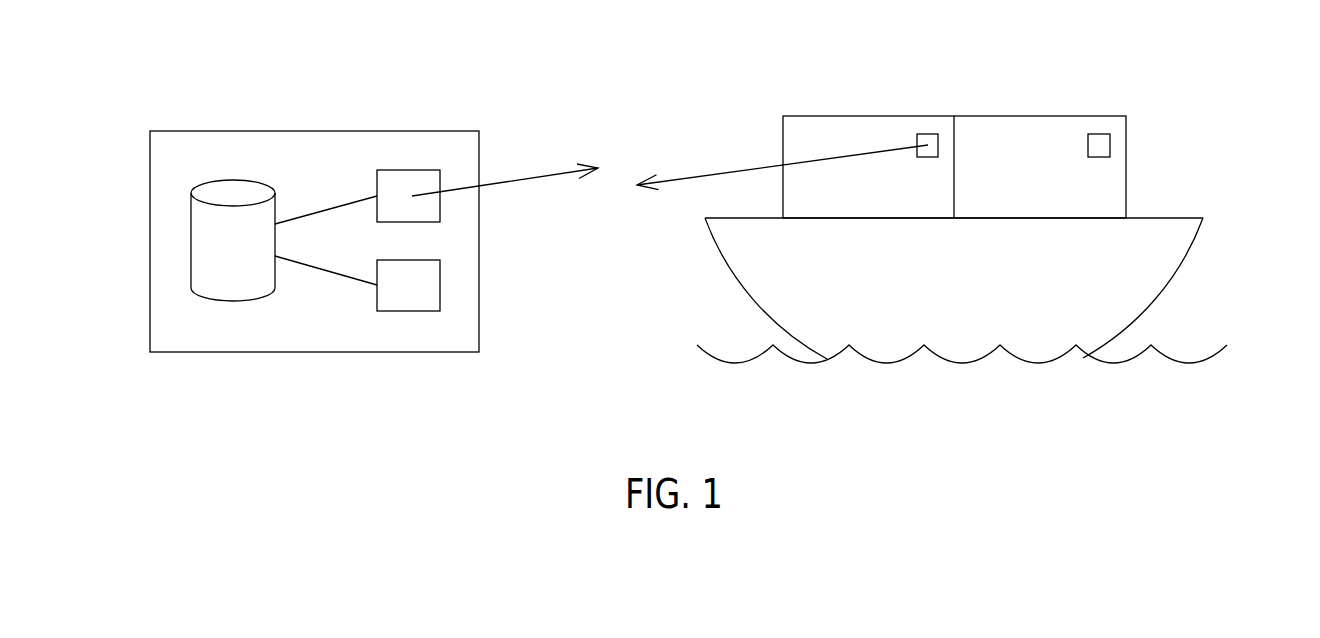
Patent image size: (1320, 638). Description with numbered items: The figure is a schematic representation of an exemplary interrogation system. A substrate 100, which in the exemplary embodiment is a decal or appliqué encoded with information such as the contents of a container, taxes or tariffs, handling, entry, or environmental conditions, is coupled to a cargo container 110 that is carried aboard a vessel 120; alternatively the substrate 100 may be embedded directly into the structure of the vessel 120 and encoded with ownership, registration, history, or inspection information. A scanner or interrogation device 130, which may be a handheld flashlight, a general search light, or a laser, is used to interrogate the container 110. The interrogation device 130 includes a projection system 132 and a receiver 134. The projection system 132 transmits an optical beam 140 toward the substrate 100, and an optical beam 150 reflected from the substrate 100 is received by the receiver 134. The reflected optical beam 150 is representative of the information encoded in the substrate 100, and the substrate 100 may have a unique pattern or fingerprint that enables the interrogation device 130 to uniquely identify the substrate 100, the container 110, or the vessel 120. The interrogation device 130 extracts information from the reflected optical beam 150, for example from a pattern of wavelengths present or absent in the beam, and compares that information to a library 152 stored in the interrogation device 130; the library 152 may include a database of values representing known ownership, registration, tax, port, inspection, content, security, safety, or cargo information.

The substrate 100 is at (928, 140).
The cargo container 110 is at (772, 155).
The vessel 120 is at (1202, 263).
The interrogation device 130 is at (192, 377).
The projection system 132 is at (405, 183).
The receiver 134 is at (410, 302).
The optical beam 140 is at (533, 160).
The reflected optical beam 150 is at (702, 190).
The library 152 is at (180, 253).